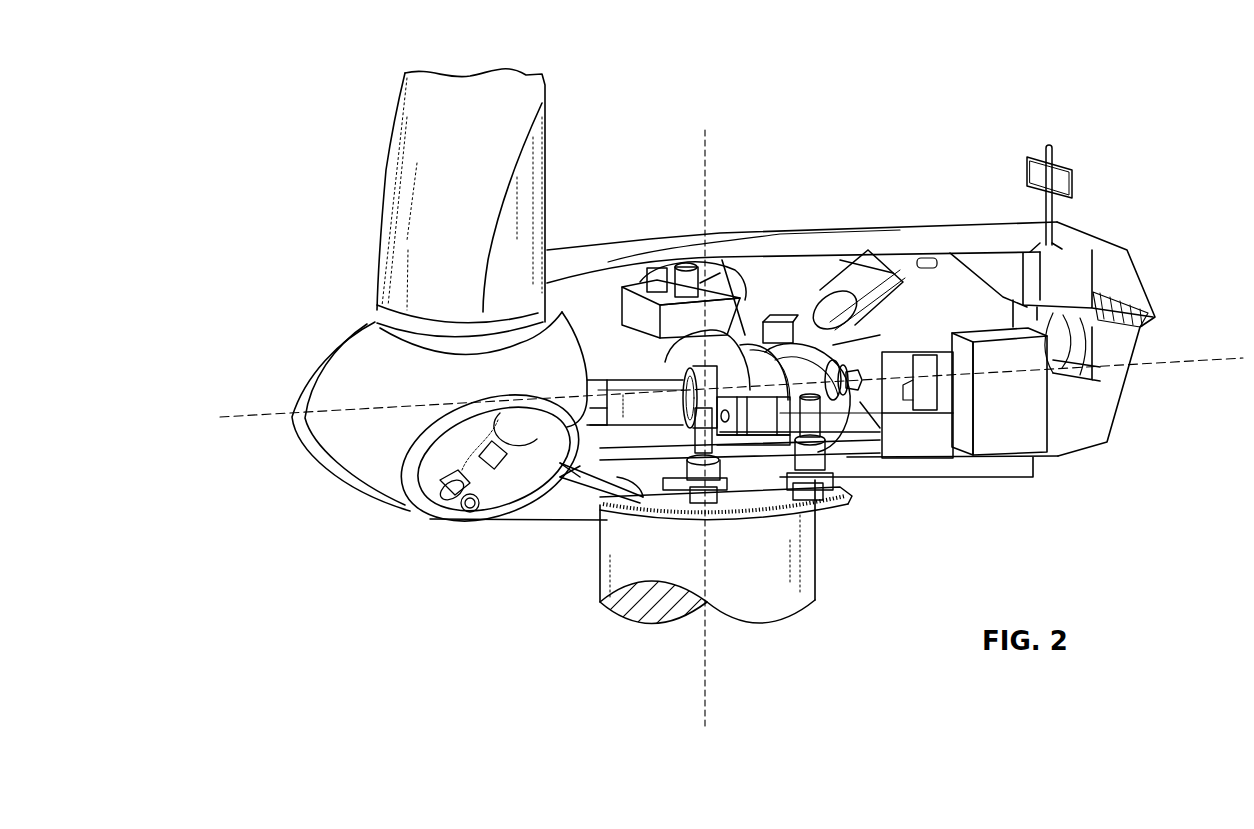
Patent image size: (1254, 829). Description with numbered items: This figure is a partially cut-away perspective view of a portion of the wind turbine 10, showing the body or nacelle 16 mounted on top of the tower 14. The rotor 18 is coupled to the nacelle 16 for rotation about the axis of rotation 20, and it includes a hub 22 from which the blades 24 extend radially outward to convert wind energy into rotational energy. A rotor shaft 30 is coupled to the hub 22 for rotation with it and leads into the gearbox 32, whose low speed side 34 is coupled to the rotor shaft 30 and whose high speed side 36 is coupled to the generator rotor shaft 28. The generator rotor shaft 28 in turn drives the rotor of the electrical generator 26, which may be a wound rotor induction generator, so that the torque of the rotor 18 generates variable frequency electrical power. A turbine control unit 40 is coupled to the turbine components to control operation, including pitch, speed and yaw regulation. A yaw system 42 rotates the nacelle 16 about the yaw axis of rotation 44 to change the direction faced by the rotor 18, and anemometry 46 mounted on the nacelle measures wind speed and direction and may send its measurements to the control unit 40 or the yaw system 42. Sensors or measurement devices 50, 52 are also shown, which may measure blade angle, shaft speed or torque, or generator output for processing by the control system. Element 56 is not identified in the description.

The wind turbine 10 is at (1167, 187).
The tower 14 is at (762, 599).
The body (nacelle) 16 is at (565, 262).
The rotor 18 is at (287, 316).
The axis of rotation 20 is at (250, 417).
The hub 22 is at (380, 434).
The blade 24 is at (408, 188).
The electrical generator 26 is at (898, 400).
The generator rotor shaft 28 is at (822, 400).
The rotor shaft 30 is at (624, 392).
The gearbox 32 is at (757, 334).
The low speed side 34 is at (693, 348).
The high speed side 36 is at (800, 353).
The turbine control unit (controller) 40 is at (998, 400).
The yaw system 42 is at (650, 530).
The axis of rotation (yaw axis) 44 is at (707, 158).
The anemometry 46 is at (1076, 178).
The sensor or measurement device 50 is at (843, 472).
The sensor or measurement device 52 is at (622, 418).
The fitting 56 is at (448, 520).